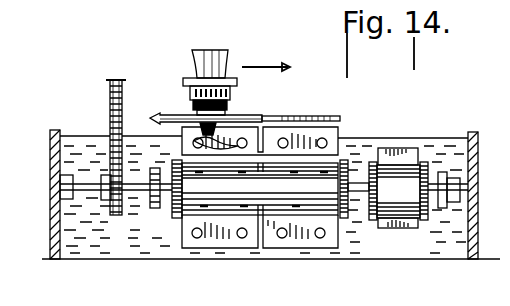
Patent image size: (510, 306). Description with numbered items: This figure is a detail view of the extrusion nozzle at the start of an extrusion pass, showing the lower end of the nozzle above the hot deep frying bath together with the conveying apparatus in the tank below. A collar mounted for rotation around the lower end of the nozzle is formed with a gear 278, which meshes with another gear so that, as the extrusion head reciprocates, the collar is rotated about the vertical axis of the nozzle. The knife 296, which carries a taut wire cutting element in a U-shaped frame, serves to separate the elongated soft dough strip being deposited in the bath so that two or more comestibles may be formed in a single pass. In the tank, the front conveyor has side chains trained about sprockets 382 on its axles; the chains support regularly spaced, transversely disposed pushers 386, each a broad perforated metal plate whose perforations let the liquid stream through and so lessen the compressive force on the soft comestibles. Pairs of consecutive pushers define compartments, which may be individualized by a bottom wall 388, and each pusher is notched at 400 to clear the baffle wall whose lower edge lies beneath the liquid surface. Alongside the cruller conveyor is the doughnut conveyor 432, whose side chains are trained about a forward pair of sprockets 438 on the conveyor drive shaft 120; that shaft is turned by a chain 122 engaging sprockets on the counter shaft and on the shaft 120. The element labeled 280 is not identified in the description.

The conveyor drive shaft 120 is at (92, 185).
The chain 122 is at (110, 125).
The gear 278 is at (228, 98).
The dispensing head 280 is at (192, 101).
The knife 296 is at (326, 110).
The sprocket 382 is at (171, 199).
The pusher 386 is at (330, 135).
The bottom wall 388 is at (327, 185).
The notch 400 is at (260, 248).
The doughnut conveyor 432 is at (428, 234).
The sprocket 438 is at (442, 156).